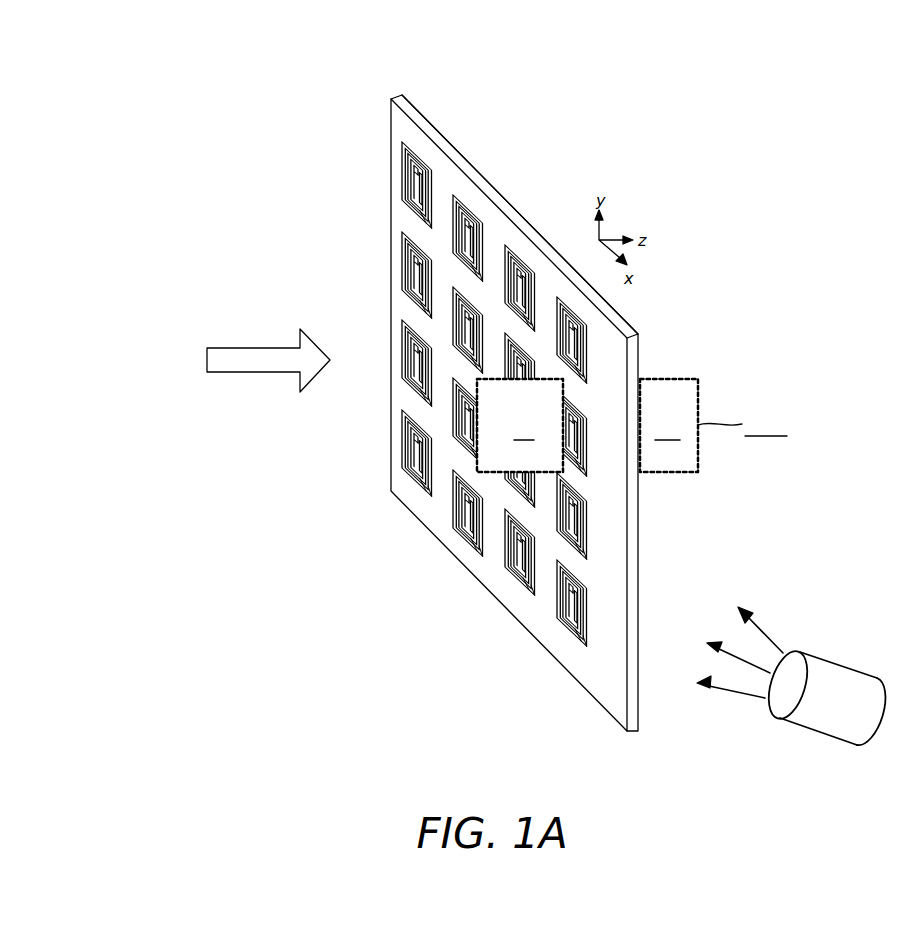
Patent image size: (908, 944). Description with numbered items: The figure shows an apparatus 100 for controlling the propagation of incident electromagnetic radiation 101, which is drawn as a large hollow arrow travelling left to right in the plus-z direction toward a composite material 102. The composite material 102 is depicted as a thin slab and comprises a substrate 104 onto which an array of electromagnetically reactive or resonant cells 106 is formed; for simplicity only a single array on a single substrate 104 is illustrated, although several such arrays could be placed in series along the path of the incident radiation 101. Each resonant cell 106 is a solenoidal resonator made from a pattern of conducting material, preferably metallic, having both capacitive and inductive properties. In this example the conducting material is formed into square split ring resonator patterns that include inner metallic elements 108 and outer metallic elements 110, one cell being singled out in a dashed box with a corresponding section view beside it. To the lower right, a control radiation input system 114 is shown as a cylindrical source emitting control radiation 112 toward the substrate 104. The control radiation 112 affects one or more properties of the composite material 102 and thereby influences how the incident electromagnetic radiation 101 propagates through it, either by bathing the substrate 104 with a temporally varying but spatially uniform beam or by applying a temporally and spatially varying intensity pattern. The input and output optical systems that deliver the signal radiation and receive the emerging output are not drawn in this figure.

The apparatus 100 is at (408, 650).
The incident electromagnetic radiation 101 is at (254, 336).
The composite material 102 is at (371, 93).
The substrate 104 is at (487, 187).
The resonant cells 106 is at (402, 322).
The inner metallic elements 108 is at (565, 457).
The outer metallic elements 110 is at (580, 407).
The control radiation 112 is at (770, 615).
The control radiation input system 114 is at (837, 663).